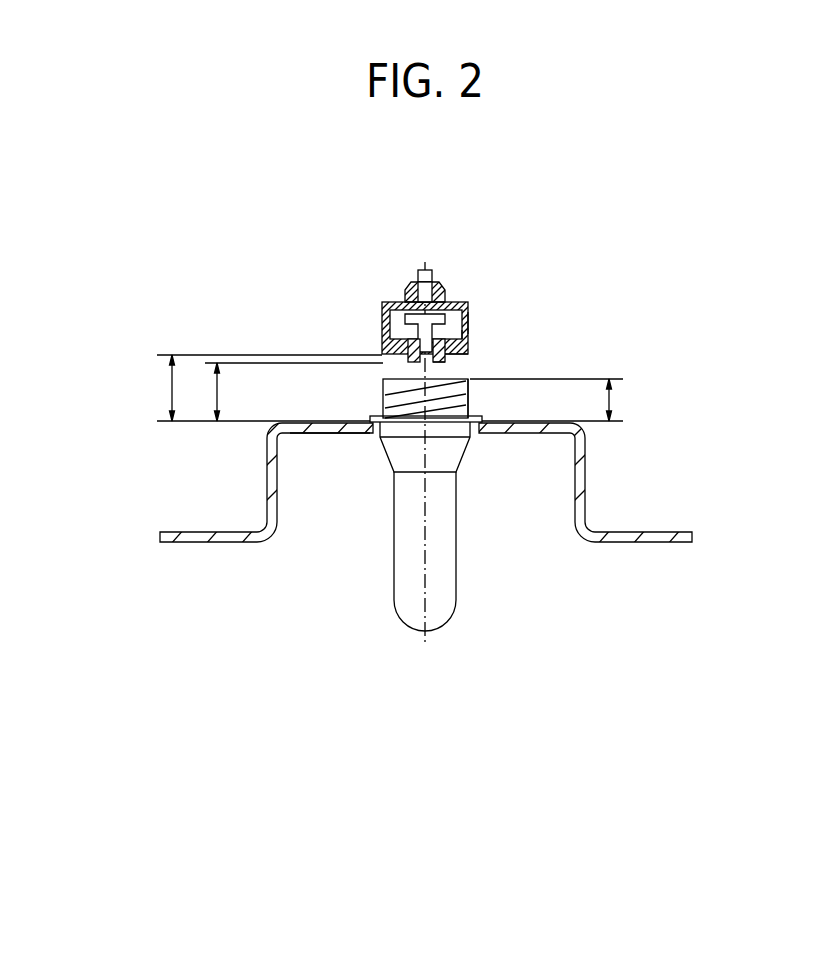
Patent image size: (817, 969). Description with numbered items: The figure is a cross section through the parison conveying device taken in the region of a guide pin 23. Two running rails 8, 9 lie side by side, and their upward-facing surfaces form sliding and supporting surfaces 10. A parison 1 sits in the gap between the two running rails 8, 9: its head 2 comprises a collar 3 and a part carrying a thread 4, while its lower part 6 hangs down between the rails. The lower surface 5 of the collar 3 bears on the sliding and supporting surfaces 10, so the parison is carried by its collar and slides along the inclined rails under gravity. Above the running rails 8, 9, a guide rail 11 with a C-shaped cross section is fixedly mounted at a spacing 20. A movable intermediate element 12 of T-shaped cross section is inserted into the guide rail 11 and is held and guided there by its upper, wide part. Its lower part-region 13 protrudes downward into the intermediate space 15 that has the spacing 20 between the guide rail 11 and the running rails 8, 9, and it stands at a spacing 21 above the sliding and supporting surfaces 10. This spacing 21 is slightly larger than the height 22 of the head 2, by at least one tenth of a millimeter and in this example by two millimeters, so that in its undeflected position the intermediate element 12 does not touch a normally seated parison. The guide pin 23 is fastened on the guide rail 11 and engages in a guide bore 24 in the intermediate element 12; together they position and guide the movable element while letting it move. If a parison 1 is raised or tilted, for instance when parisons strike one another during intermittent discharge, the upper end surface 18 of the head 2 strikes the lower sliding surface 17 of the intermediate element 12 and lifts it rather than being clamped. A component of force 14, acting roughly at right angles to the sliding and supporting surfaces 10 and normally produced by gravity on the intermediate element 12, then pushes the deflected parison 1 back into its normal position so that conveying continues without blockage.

The parison 1 is at (405, 637).
The head 2 is at (468, 390).
The collar 3 is at (611, 401).
The thread 4 is at (383, 388).
The lower surface 5 is at (450, 426).
The lower part 6 is at (413, 567).
The running rail 8 is at (175, 541).
The running rail 9 is at (680, 545).
The sliding and supporting surfaces 10 is at (372, 422).
The guide rail 11 is at (470, 302).
The movable intermediate element 12 is at (470, 323).
The lower part-region 13 is at (470, 351).
The component of force 14 is at (382, 306).
The intermediate space 15 is at (446, 364).
The lower sliding surface 17 is at (382, 342).
The upper end surface 18 is at (402, 362).
The spacing 20 is at (170, 395).
The spacing 21 is at (216, 395).
The height 22 is at (611, 401).
The guide pin 23 is at (405, 292).
The guide bore 24 is at (470, 338).